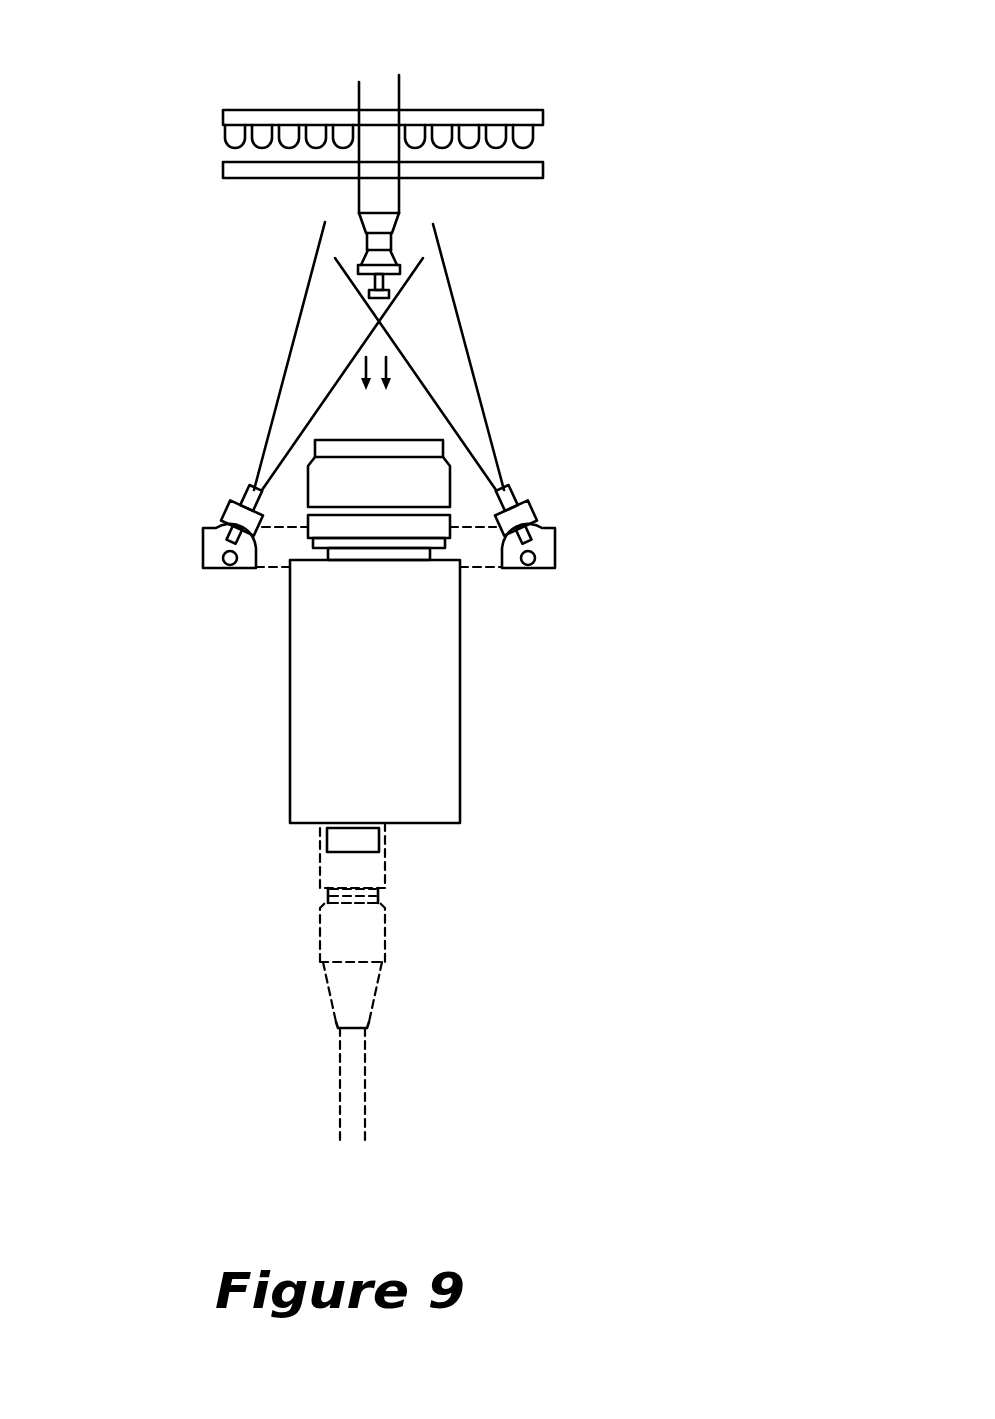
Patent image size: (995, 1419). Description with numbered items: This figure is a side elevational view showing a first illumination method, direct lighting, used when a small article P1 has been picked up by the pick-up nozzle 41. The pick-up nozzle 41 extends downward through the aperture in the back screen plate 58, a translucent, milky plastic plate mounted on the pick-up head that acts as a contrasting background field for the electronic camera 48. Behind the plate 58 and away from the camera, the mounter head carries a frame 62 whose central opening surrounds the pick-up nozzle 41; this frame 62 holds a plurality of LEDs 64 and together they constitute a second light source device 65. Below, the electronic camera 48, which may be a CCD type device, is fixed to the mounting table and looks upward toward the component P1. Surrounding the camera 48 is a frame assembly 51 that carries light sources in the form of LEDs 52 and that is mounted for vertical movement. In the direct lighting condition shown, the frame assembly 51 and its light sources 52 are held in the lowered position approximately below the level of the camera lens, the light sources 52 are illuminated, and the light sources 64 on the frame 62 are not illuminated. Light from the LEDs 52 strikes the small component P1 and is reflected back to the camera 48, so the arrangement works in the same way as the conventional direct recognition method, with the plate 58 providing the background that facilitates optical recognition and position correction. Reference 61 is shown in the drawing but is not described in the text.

The pick-up nozzle 41 is at (388, 95).
The second light source device 65 is at (421, 133).
The frame 62 is at (512, 108).
The LEDs 64 is at (223, 138).
The back screen plate 58 is at (525, 180).
The camera assembly 61 is at (459, 681).
The component P1 is at (385, 312).
The LEDs 52 is at (245, 490).
The frame assembly 51 is at (203, 537).
The electronic camera 48 is at (438, 693).